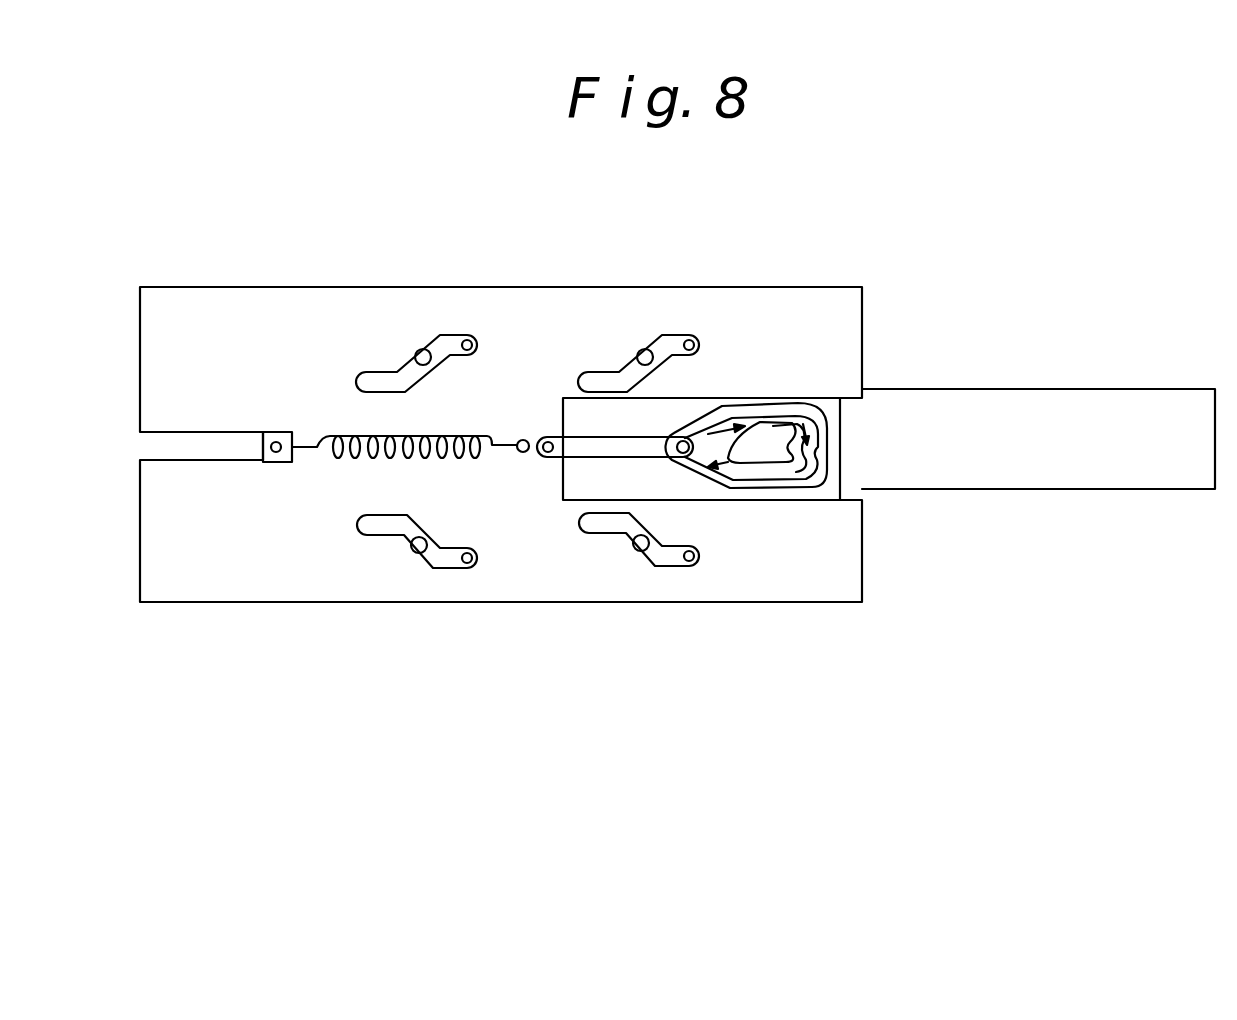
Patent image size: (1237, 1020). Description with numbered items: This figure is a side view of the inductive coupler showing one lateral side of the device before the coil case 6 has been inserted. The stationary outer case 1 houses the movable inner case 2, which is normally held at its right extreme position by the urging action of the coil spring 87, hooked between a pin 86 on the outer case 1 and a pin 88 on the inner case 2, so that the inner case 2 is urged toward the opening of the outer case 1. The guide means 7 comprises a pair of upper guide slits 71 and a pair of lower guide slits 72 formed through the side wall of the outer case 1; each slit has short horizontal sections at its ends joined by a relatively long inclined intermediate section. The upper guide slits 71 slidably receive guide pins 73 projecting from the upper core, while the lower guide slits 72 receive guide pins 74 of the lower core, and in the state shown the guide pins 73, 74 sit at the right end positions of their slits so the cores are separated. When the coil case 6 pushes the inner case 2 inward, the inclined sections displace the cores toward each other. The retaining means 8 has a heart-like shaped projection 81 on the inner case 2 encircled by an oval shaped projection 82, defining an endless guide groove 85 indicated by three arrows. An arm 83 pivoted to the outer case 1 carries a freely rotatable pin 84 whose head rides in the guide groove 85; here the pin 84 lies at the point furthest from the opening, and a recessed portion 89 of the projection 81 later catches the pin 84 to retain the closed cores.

The stationary outer case 1 is at (840, 362).
The movable inner case 2 is at (663, 413).
The coil case 6 is at (1138, 478).
The guide means 7 is at (403, 333).
The retaining means 8 is at (838, 445).
The upper guide slit 71 is at (430, 340).
The lower guide slit 72 is at (427, 558).
The guide pin 73 is at (469, 340).
The guide pin 74 is at (467, 564).
The heart-like shaped projection 81 is at (758, 457).
The oval shaped projection 82 is at (820, 482).
The arm 83 is at (592, 450).
The pin 84 is at (697, 438).
The guide groove 85 is at (727, 470).
The pin 86 is at (525, 440).
The coil spring 87 is at (450, 433).
The pin 88 is at (276, 441).
The recessed portion 89 is at (778, 455).